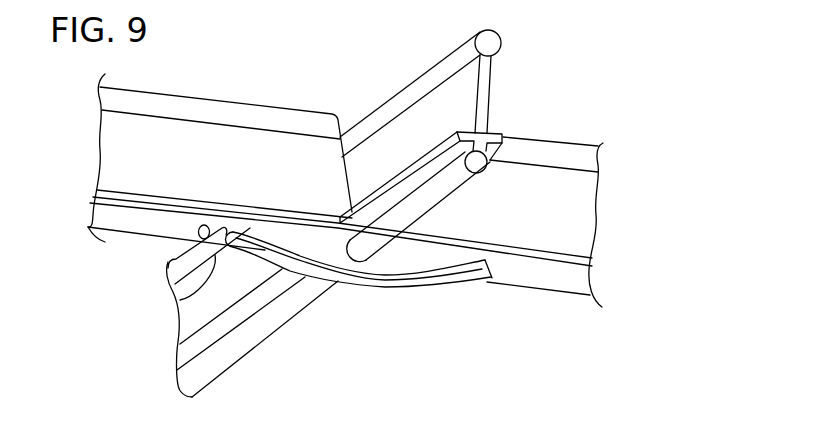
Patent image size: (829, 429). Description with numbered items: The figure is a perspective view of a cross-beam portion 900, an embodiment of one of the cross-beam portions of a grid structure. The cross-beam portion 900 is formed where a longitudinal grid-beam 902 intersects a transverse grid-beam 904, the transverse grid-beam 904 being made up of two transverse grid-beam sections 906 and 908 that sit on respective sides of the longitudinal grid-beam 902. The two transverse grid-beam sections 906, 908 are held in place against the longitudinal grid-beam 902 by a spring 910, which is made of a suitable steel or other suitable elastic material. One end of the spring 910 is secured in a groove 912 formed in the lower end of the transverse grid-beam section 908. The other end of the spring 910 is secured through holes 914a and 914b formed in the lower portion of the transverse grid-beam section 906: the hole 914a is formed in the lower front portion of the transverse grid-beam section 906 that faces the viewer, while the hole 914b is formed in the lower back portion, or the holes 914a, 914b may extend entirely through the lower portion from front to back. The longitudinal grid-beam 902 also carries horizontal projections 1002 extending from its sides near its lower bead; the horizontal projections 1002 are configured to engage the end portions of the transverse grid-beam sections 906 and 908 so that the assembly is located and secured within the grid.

The cross-beam portion 900 is at (622, 56).
The longitudinal grid-beam 902 is at (233, 292).
The transverse grid-beam 904 is at (290, 68).
The transverse grid-beam section 906 is at (118, 148).
The transverse grid-beam section 908 is at (574, 226).
The spring 910 is at (416, 271).
The groove 912 is at (497, 302).
The hole 914a is at (180, 300).
The hole 914b is at (198, 231).
The horizontal projection 1002 is at (489, 133).